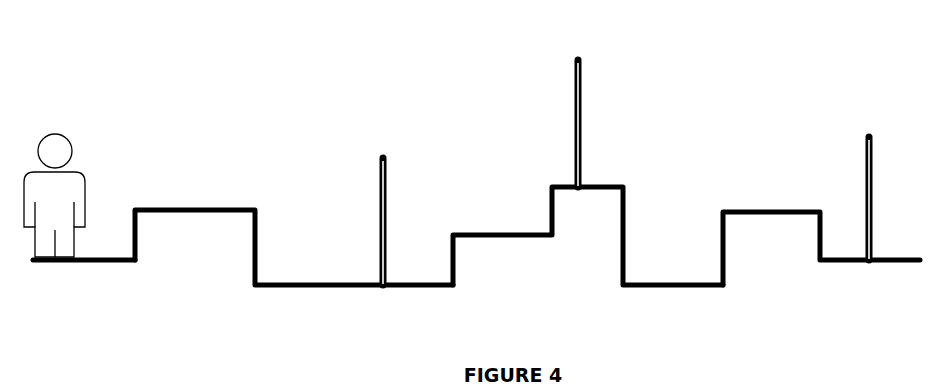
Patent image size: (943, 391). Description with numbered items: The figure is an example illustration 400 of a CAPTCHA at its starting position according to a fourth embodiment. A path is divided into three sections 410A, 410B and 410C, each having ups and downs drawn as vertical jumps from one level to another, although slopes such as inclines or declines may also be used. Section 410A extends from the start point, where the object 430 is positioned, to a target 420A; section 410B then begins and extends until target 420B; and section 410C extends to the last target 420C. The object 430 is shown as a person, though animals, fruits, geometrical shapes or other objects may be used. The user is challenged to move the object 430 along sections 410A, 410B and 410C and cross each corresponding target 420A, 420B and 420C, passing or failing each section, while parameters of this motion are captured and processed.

The illustration 400 is at (358, 70).
The object 430 is at (85, 187).
The section 410A is at (193, 208).
The section 410B is at (500, 233).
The section 410C is at (767, 210).
The target 420A is at (375, 210).
The target 420B is at (570, 122).
The target 420C is at (863, 180).